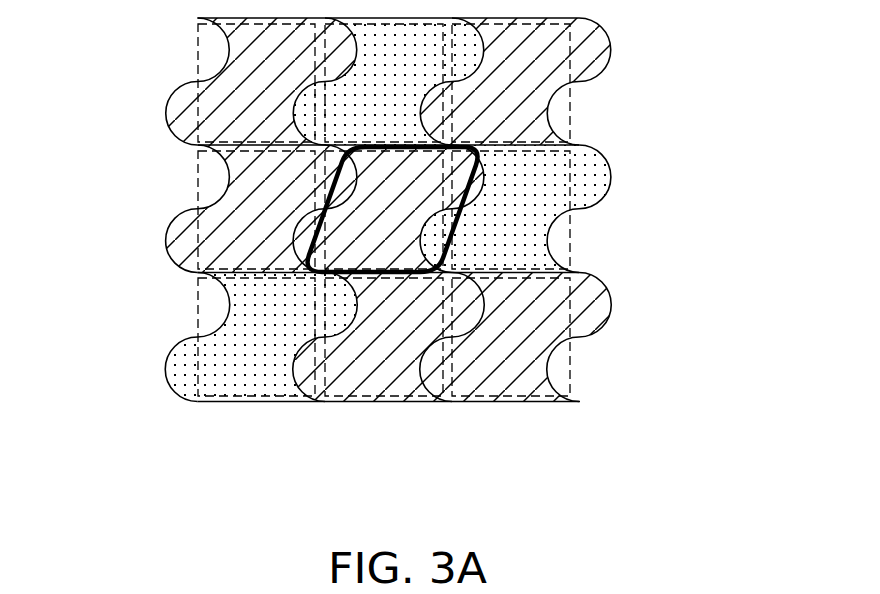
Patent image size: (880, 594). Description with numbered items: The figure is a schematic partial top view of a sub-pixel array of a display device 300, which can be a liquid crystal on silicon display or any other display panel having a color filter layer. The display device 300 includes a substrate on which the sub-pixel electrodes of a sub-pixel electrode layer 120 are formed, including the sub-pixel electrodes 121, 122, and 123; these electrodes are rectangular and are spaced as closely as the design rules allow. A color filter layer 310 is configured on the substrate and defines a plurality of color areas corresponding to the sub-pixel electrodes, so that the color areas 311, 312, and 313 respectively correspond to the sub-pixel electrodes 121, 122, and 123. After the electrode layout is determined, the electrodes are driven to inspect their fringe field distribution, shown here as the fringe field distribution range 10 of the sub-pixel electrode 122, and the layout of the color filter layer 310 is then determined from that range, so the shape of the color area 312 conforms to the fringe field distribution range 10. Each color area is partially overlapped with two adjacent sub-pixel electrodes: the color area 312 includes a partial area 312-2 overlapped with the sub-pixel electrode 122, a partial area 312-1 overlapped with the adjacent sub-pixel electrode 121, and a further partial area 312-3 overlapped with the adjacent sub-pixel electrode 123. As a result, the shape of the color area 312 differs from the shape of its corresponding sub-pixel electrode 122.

The fringe field distribution range 10 is at (335, 151).
The sub-pixel electrode layer 120 is at (572, 365).
The sub-pixel electrode 121 is at (213, 182).
The sub-pixel electrode 122 is at (381, 250).
The sub-pixel electrode 123 is at (557, 242).
The display device 300 is at (578, 424).
The color filter layer 310 is at (623, 296).
The color area 311 is at (215, 250).
The color area 312 is at (422, 208).
The partial area 312-1 is at (314, 217).
The partial area 312-2 is at (407, 288).
The partial area 312-3 is at (562, 148).
The color area 313 is at (483, 175).